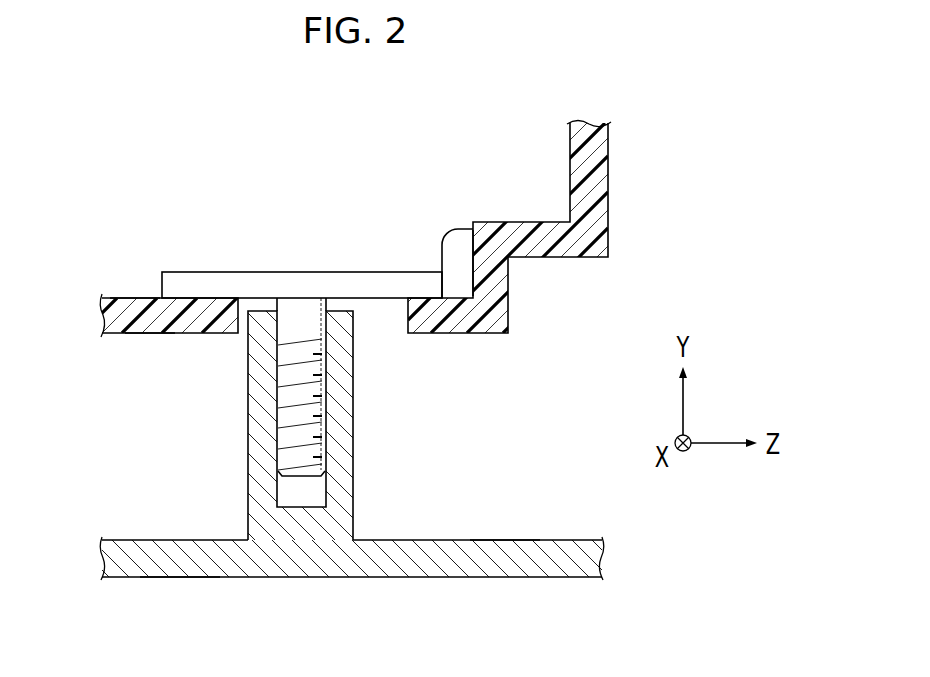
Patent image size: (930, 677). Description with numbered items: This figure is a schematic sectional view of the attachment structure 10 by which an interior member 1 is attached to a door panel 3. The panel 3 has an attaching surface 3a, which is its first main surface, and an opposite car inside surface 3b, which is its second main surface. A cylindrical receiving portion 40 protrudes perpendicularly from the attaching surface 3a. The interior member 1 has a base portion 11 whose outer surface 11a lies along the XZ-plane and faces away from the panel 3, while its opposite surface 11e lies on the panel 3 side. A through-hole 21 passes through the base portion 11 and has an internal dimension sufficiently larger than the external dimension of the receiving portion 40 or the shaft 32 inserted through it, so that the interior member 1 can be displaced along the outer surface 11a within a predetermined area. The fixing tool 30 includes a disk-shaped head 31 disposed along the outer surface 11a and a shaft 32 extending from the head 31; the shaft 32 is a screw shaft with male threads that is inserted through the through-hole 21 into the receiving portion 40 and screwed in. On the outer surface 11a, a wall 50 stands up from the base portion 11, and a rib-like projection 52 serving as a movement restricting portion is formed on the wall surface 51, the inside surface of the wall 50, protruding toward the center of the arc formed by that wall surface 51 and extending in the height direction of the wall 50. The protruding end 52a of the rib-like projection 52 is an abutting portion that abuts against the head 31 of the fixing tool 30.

The interior member 1 is at (620, 177).
The panel 3 is at (569, 540).
The attaching surface 3a is at (509, 540).
The car inside surface 3b is at (177, 577).
The attachment structure 10 is at (409, 151).
The base portion 11 is at (102, 315).
The outer surface 11a is at (133, 297).
The surface 11e is at (150, 335).
The through-hole 21 is at (245, 299).
The fixing tool 30 is at (332, 375).
The head 31 is at (381, 290).
The shaft 32 is at (318, 333).
The receiving portion 40 is at (247, 425).
The wall 50 is at (472, 245).
The wall surface 51 is at (480, 223).
The rib-like projection 52 is at (395, 249).
The protruding end 52a is at (441, 243).